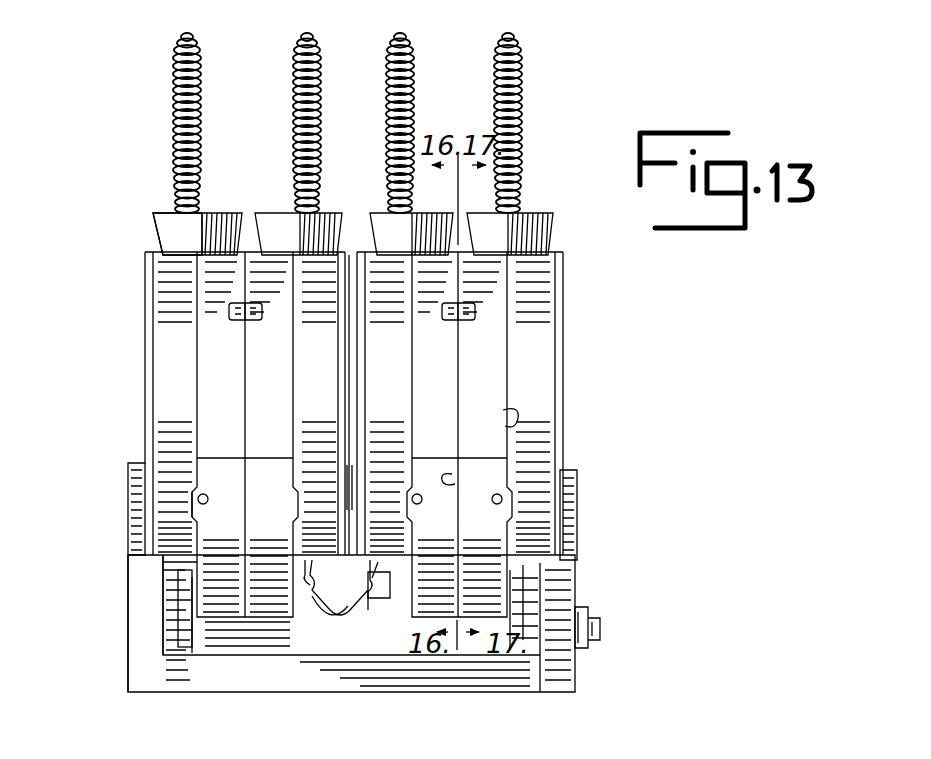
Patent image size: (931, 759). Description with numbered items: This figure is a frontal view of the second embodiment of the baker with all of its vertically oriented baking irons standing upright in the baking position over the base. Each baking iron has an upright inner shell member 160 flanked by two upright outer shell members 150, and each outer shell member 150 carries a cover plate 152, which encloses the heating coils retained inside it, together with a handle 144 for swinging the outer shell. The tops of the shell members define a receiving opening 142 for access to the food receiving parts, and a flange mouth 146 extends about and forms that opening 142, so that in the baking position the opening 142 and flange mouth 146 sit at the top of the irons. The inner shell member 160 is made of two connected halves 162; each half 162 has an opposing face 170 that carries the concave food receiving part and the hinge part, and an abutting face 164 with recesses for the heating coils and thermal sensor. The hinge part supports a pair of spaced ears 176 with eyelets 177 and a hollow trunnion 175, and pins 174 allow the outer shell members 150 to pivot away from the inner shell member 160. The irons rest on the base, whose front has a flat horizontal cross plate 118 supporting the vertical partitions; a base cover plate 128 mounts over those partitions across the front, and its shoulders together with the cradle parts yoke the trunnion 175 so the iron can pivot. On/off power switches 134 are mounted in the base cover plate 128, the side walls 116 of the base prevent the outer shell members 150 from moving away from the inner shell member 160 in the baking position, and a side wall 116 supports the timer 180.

The handle 144 is at (168, 124).
The receiving opening 142 is at (268, 204).
The flange mouth 146 is at (173, 230).
The inner shell member 160 is at (240, 355).
The cover plate 152 is at (143, 366).
The outer shell member 150 is at (196, 434).
The ear 176 is at (200, 498).
The eyelet 177 is at (180, 506).
The hollow trunnion 175 is at (184, 598).
The pin 174 is at (222, 568).
The base cover plate 128 is at (313, 620).
The on/off power switch 134 is at (382, 552).
The half 162 is at (498, 434).
The opposing face 170 is at (505, 410).
The abutting face 164 is at (455, 480).
The side wall 116 is at (575, 534).
The timer 180 is at (600, 622).
The cross plate 118 is at (327, 641).